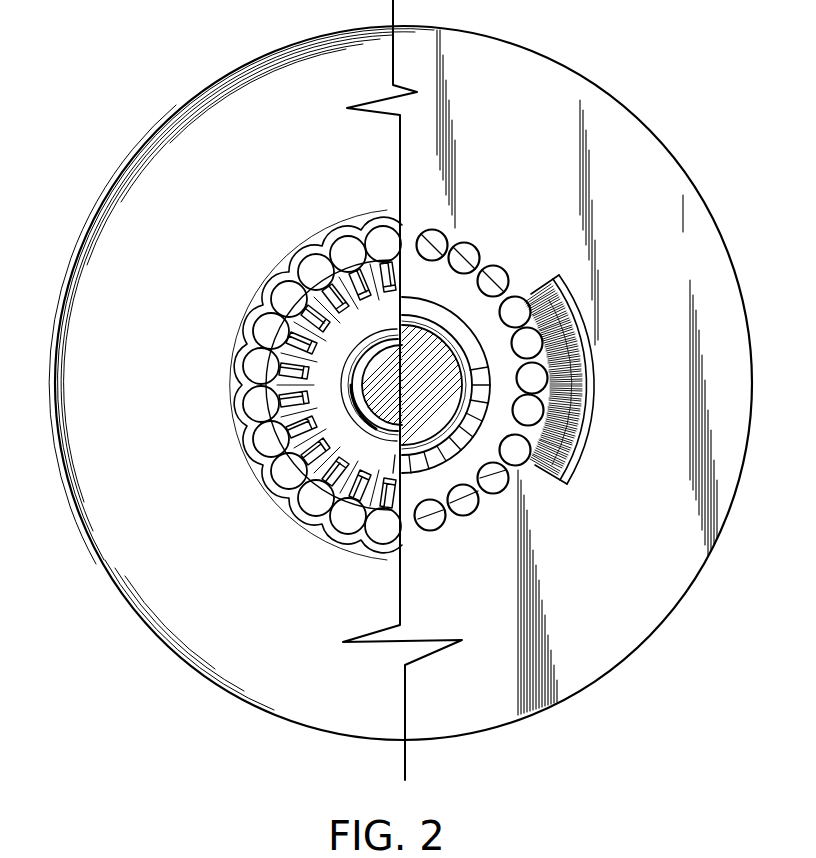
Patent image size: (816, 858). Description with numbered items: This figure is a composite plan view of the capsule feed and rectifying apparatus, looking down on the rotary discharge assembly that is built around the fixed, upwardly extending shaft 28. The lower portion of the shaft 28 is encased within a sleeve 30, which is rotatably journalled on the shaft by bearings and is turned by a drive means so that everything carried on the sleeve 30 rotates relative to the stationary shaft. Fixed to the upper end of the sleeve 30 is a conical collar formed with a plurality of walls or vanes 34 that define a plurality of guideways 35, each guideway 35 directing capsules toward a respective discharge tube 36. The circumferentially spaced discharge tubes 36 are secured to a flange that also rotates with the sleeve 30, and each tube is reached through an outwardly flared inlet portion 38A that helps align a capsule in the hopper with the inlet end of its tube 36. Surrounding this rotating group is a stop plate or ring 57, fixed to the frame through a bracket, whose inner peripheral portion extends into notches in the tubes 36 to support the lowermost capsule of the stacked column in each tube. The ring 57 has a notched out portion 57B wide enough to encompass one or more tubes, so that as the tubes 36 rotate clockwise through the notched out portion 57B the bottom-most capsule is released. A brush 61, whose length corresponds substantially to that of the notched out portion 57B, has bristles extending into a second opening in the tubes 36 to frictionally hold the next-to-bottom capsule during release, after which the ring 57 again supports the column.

The shaft 28 is at (404, 297).
The sleeve 30 is at (494, 493).
The walls or vanes 34 is at (268, 445).
The guideways 35 is at (328, 250).
The discharge tube 36 is at (268, 332).
The inlet portion 38A is at (375, 226).
The stop plate or ring 57 is at (606, 556).
The notched out portion 57B is at (528, 292).
The brush 61 is at (590, 414).